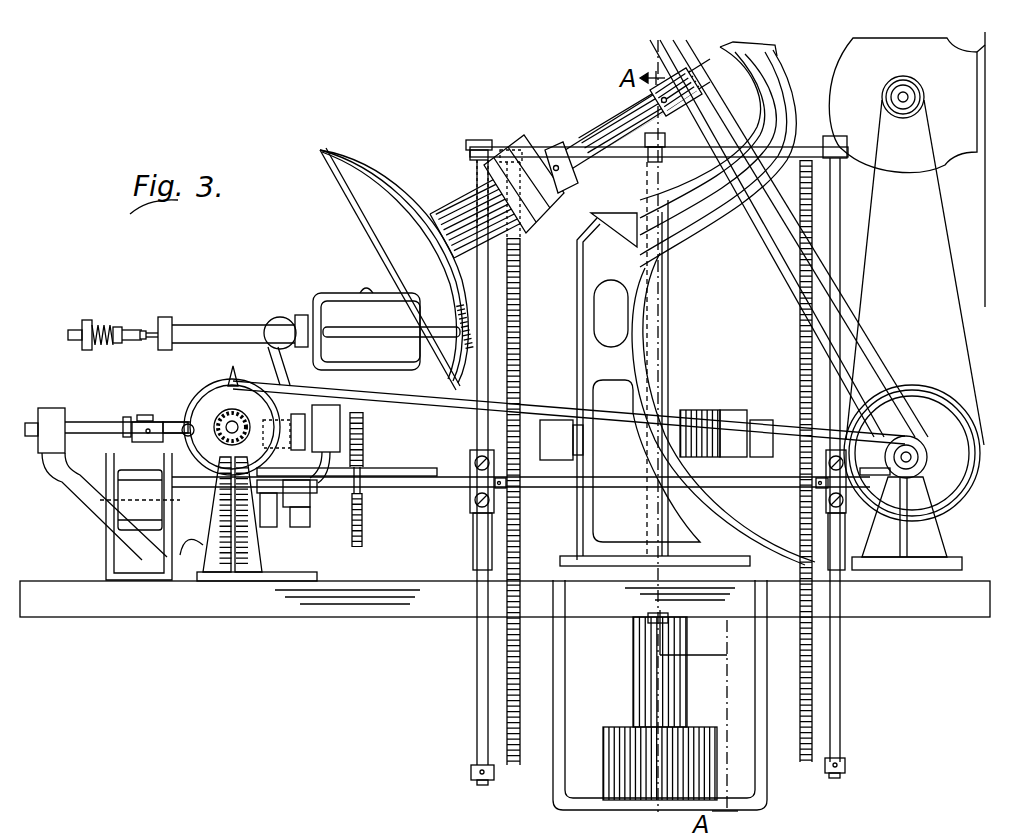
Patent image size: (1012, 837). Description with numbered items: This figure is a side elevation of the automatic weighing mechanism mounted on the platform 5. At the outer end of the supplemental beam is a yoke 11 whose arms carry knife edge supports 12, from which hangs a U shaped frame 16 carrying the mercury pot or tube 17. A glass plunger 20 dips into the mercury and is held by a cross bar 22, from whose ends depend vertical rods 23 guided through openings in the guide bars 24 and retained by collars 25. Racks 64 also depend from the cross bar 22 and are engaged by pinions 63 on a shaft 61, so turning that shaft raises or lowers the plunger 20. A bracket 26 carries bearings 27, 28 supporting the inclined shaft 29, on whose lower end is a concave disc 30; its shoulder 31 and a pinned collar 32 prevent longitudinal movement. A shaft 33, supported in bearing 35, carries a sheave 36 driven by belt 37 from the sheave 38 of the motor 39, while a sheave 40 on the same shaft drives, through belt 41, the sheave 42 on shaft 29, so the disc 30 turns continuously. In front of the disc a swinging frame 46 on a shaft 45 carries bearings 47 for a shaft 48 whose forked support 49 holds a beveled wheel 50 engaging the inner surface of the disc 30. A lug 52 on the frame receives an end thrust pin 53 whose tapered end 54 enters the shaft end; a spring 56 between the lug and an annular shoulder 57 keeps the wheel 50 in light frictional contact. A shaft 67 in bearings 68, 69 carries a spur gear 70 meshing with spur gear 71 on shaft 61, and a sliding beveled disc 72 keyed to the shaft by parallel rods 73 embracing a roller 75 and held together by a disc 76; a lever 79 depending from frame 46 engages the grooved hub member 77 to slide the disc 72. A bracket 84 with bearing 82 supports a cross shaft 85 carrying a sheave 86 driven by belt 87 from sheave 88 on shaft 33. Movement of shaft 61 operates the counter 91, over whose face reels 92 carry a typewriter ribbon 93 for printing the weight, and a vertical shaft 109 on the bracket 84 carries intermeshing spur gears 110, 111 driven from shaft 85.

The platform 5 is at (215, 618).
The yoke 11 is at (700, 412).
The knife edge support 12 is at (540, 428).
The U shaped frame 16 is at (570, 676).
The pot or tube 17 is at (688, 646).
The glass rod or plunger 20 is at (672, 304).
The cross bar 22 is at (538, 142).
The vertical rod 23 is at (475, 178).
The guide bar 24 is at (470, 538).
The collar 25 is at (471, 774).
The bracket 26 is at (683, 240).
The bearing 27 is at (490, 141).
The bearing 28 is at (778, 54).
The shaft 29 is at (607, 127).
The concave disc 30 is at (395, 269).
The shoulder 31 is at (436, 205).
The collar 32 is at (580, 174).
The shaft 33 is at (917, 455).
The bearing 35 is at (948, 548).
The sheave 36 is at (925, 388).
The belt 37 is at (946, 240).
The sheave 38 is at (906, 92).
The motor 39 is at (907, 169).
The sheave 40 is at (927, 460).
The belt 41 is at (872, 372).
The sheave 42 is at (672, 62).
The shaft 45 is at (278, 317).
The frame 46 is at (205, 325).
The shaft bearing 47 is at (163, 317).
The shaft 48 is at (240, 325).
The forked support 49 is at (330, 293).
The disc or wheel 50 is at (360, 327).
The lug 52 is at (88, 320).
The end thrust pin 53 is at (70, 340).
The tapered end 54 is at (142, 341).
The spring 56 is at (104, 323).
The annular shoulder 57 is at (120, 327).
The shaft 61 is at (430, 489).
The pinion 63 is at (510, 489).
The rack 64 is at (520, 704).
The shaft 67 is at (90, 422).
The bearing 68 is at (50, 408).
The bearing 69 is at (338, 405).
The spur gear 70 is at (364, 428).
The spur gear 71 is at (363, 527).
The disc 72 is at (229, 374).
The parallel rod 73 is at (180, 422).
The roller 75 is at (142, 415).
The disc 76 is at (133, 428).
The hub member 77 is at (305, 442).
The lever 79 is at (292, 382).
The bearing 82 is at (222, 438).
The bracket 84 is at (211, 542).
The shaft 85 is at (236, 422).
The sheave 86 is at (183, 436).
The belt 87 is at (430, 411).
The sheave 88 is at (897, 478).
The registering mechanism or counter 91 is at (105, 480).
The reel 92 is at (109, 462).
The typewriter ribbon 93 is at (140, 500).
The vertical shaft 109 is at (278, 444).
The spur gear 110 is at (310, 500).
The spur gear 111 is at (272, 528).